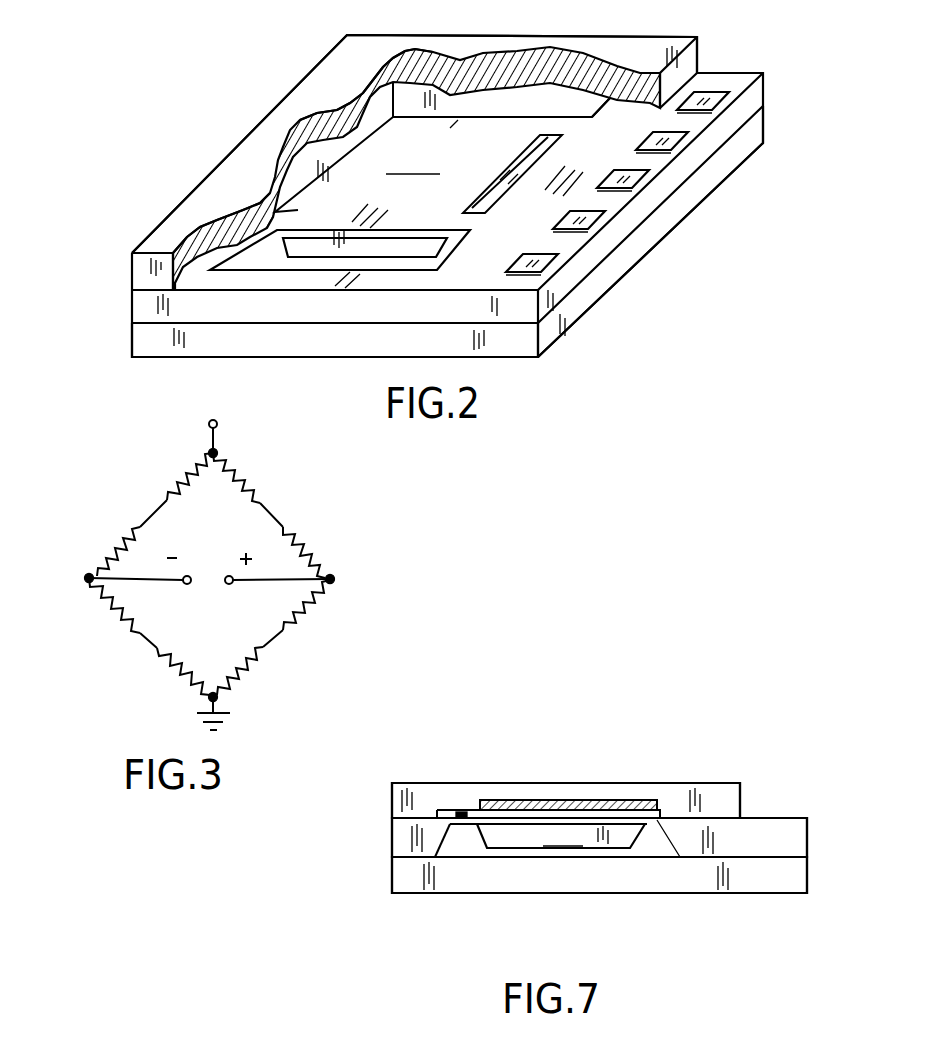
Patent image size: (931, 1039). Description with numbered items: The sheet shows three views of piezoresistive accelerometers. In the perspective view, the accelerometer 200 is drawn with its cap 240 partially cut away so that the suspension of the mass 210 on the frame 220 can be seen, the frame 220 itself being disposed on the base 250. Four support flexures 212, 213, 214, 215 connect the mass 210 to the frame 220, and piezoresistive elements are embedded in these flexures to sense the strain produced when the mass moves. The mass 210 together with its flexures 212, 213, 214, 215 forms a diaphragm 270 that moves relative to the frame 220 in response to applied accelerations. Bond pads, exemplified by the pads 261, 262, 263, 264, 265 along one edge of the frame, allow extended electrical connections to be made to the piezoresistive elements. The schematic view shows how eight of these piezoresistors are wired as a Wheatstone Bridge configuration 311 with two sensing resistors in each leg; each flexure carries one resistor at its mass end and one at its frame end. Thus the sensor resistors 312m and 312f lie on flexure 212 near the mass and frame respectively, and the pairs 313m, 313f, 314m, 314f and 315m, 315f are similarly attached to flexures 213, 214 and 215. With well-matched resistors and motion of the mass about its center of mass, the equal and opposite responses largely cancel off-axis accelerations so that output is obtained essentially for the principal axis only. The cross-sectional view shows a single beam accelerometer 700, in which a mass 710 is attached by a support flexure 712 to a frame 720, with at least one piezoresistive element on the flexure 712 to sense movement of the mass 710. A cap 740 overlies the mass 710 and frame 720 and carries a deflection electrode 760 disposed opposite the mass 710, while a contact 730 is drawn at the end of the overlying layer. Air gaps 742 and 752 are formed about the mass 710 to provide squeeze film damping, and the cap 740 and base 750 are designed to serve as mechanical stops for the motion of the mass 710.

In FIG. 2, the accelerometer 200 is at (205, 122).
In FIG. 2, the mass 210 is at (330, 140).
In FIG. 2, the support flexure 212 is at (243, 210).
In FIG. 2, the support flexure 213 is at (357, 122).
In FIG. 2, the support flexure 214 is at (562, 126).
In FIG. 2, the support flexure 215 is at (470, 220).
In FIG. 2, the frame 220 is at (148, 304).
In FIG. 2, the cap 240 is at (133, 271).
In FIG. 2, the base 250 is at (148, 340).
In FIG. 2, the bond pad 261 is at (558, 262).
In FIG. 2, the bond pad 262 is at (605, 218).
In FIG. 2, the bond pad 263 is at (649, 181).
In FIG. 2, the bond pad 264 is at (688, 143).
In FIG. 2, the bond pad 265 is at (731, 101).
In FIG. 2, the diaphragm 270 is at (396, 204).
In FIG. 3, the Wheatstone Bridge configuration 311 is at (311, 498).
In FIG. 3, the sensor resistor 312m is at (173, 480).
In FIG. 3, the sensor resistor 312f is at (243, 487).
In FIG. 3, the sensor resistor 313m is at (260, 663).
In FIG. 3, the sensor resistor 313f is at (157, 663).
In FIG. 3, the sensor resistor 314m is at (110, 543).
In FIG. 3, the sensor resistor 314f is at (298, 538).
In FIG. 3, the sensor resistor 315m is at (305, 603).
In FIG. 3, the sensor resistor 315f is at (107, 600).
In FIG. 7, the single beam accelerometer 700 is at (683, 906).
In FIG. 7, the mass 710 is at (548, 835).
In FIG. 7, the support flexure 712 is at (435, 857).
In FIG. 7, the frame 720 is at (790, 838).
In FIG. 7, the contact 730 is at (466, 812).
In FIG. 7, the cap 740 is at (727, 793).
In FIG. 7, the air gap 742 is at (560, 812).
In FIG. 7, the base 750 is at (790, 876).
In FIG. 7, the air gap 752 is at (582, 857).
In FIG. 7, the deflection electrode 760 is at (623, 800).